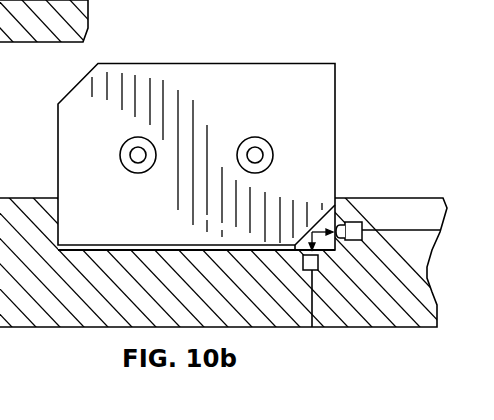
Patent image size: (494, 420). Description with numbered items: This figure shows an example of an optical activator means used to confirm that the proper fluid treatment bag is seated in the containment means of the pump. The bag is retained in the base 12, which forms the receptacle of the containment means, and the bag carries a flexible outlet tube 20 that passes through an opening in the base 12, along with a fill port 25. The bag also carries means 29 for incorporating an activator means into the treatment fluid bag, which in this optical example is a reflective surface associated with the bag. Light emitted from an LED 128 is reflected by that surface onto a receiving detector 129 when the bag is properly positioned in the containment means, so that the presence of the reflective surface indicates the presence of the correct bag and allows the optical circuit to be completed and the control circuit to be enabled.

The base 12 is at (430, 199).
The flexible outlet tube 20 is at (123, 145).
The fill port 25 is at (268, 143).
The means to incorporate activator means into the treatment fluid bag 29 is at (243, 63).
The pin 128 is at (338, 214).
The pin 129 is at (316, 270).